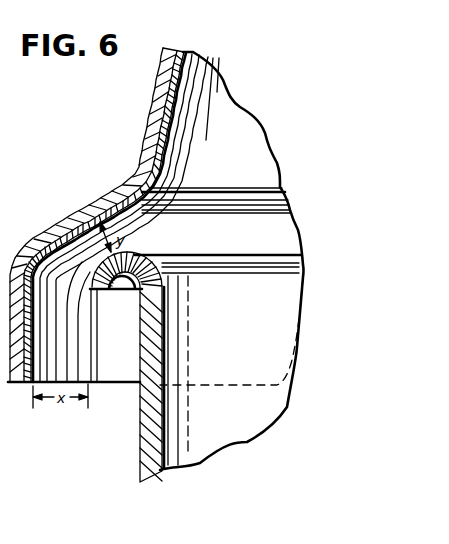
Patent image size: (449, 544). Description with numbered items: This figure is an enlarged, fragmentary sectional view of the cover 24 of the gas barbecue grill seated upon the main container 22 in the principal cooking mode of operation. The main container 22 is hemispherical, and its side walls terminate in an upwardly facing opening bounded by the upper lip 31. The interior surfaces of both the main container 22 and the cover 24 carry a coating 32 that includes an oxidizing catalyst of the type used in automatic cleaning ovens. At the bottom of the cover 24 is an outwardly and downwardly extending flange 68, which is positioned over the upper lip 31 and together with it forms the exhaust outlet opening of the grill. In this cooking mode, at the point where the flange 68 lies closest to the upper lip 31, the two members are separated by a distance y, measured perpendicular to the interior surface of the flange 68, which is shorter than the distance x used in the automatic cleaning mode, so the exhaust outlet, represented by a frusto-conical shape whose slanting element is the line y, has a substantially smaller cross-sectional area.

The main container 22 is at (138, 462).
The cover 24 is at (146, 127).
The upper lip 31 is at (216, 253).
The coating 32 is at (162, 166).
The flange 68 is at (100, 196).